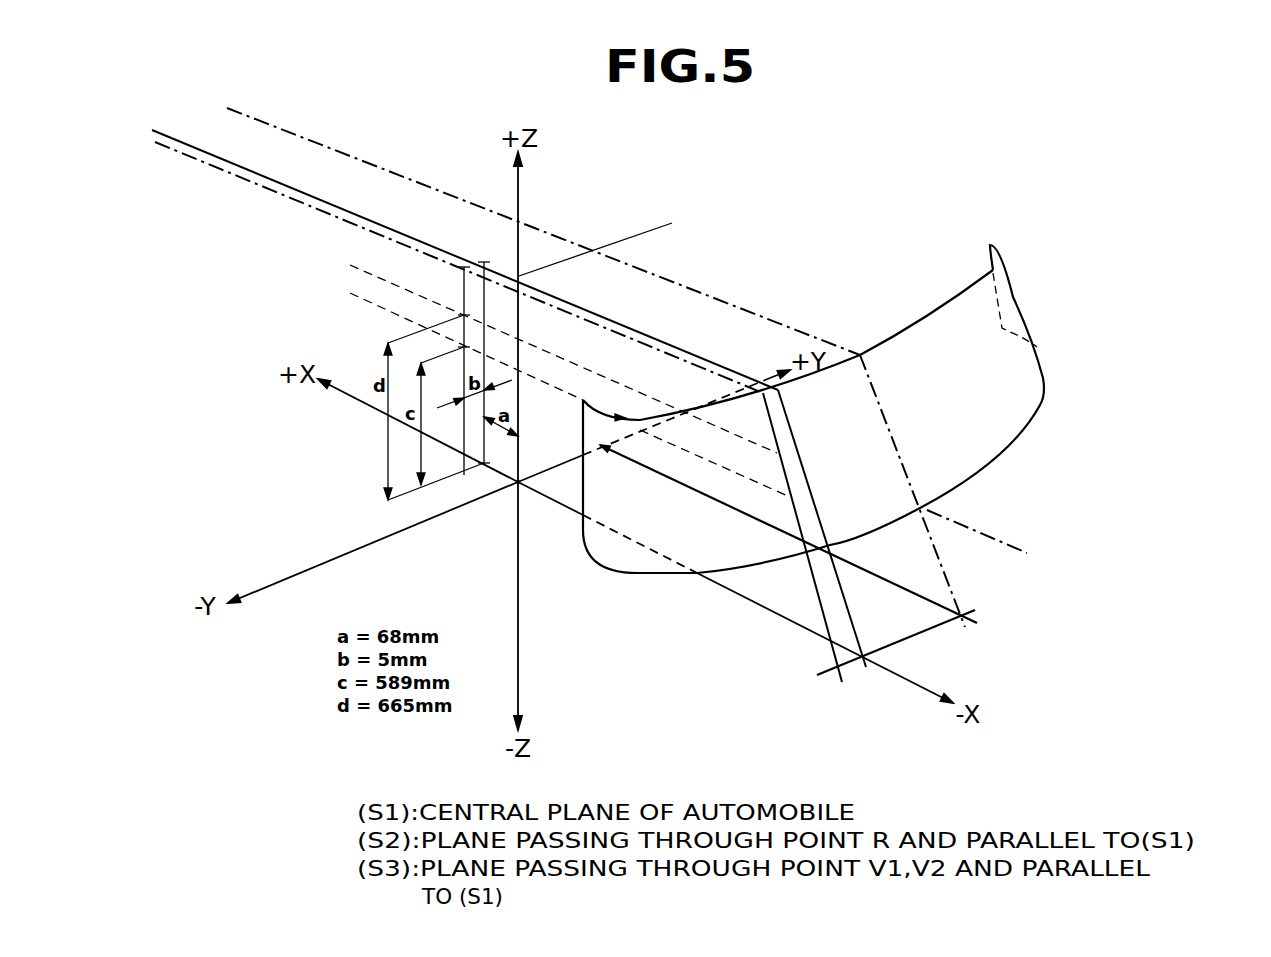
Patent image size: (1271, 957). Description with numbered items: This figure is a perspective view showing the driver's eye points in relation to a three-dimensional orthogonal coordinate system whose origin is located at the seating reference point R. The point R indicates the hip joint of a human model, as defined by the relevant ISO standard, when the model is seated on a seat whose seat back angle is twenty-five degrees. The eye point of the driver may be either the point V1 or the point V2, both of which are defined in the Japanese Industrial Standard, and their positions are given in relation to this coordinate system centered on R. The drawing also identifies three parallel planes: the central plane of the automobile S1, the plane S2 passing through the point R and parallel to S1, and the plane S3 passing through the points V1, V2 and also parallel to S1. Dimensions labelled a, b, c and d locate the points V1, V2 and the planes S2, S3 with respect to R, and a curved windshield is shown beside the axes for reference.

The central plane of automobile S1 is at (612, 354).
The plane passing through point R and parallel to S1 S2 is at (507, 386).
The plane passing through points V1, V2 and parallel to S1 S3 is at (471, 404).
The eye point V1 is at (455, 296).
The eye point V2 is at (452, 365).
The seating reference point R is at (529, 464).